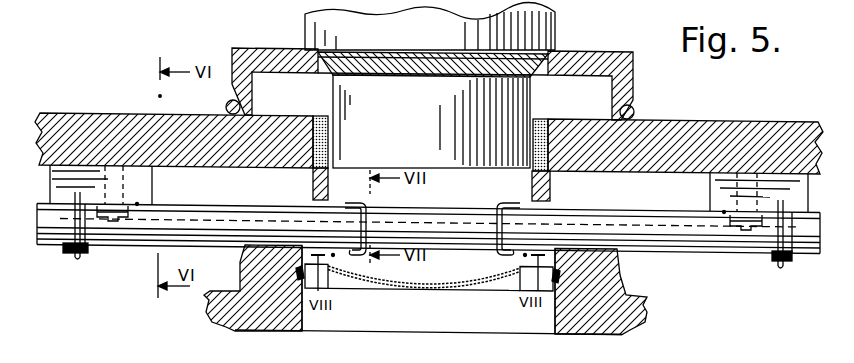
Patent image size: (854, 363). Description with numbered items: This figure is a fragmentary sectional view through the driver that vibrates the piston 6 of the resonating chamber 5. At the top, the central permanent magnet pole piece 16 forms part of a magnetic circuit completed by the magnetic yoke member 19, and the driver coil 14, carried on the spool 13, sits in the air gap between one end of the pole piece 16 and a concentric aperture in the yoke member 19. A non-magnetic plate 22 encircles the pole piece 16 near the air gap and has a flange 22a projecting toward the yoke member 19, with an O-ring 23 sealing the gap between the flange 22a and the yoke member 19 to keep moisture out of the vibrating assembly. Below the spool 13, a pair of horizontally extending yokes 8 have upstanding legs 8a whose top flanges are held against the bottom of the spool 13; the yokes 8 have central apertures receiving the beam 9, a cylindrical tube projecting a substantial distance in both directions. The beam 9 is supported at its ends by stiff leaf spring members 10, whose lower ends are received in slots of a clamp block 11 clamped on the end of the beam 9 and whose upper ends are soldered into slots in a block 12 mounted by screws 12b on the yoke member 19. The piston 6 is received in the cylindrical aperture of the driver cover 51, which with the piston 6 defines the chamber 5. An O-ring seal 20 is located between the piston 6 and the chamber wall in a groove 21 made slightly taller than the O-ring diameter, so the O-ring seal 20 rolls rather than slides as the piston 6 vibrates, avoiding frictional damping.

The central permanent magnet pole piece 16 is at (552, 30).
The non-magnetic plate 22 is at (253, 48).
The flange 22a is at (231, 100).
The O-ring 23 is at (633, 106).
The driver coil 14 is at (552, 150).
The magnetic yoke member 19 is at (722, 128).
The spool 13 is at (550, 186).
The block 12 is at (55, 184).
The beam 9 is at (216, 193).
The leaf spring members 10 is at (75, 220).
The clamp block 11 is at (68, 254).
The screws 12b is at (131, 220).
The yokes 8 is at (506, 229).
The upstanding legs 8a is at (357, 224).
The resonating chamber 5 is at (302, 318).
The driver cover 51 is at (272, 320).
The O-ring seal 20 is at (598, 278).
The piston 6 is at (508, 281).
The groove 21 is at (557, 285).